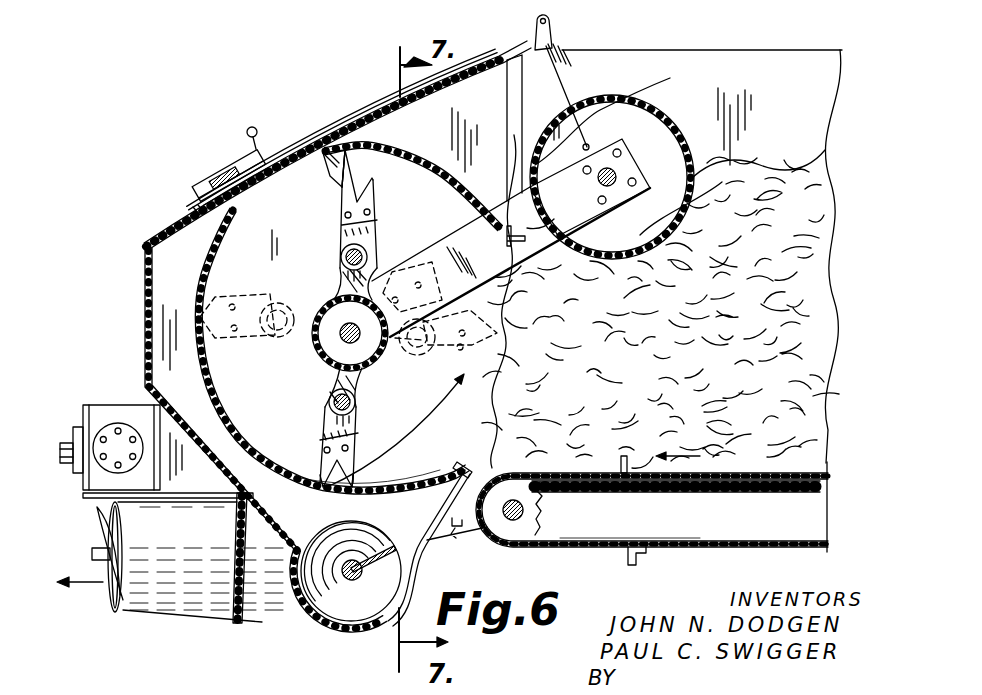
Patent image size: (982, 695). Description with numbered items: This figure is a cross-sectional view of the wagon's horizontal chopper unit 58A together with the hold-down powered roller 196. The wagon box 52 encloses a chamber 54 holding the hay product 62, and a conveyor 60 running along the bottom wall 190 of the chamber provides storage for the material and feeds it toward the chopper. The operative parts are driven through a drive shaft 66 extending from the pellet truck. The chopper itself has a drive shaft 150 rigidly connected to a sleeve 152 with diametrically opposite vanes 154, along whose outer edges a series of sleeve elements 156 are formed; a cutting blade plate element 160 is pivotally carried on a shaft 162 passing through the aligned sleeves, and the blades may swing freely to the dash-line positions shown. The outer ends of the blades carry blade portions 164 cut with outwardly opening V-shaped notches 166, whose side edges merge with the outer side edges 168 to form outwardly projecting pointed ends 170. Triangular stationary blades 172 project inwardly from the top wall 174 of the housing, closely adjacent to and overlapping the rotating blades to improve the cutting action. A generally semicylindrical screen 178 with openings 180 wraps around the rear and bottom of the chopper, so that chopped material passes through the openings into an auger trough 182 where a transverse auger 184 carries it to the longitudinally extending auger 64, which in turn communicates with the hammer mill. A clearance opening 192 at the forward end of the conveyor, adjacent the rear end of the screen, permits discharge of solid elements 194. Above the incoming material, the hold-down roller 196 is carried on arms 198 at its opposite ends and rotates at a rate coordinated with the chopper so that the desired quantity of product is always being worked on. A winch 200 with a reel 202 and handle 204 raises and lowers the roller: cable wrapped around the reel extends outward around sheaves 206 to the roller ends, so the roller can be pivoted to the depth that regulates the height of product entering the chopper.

The box 52 is at (716, 50).
The chamber 54 is at (805, 85).
The horizontally rotatable chopper unit 58A is at (303, 196).
The conveyor 60 is at (828, 462).
The product 62 is at (812, 323).
The auger 64 is at (122, 612).
The drive shaft 66 is at (60, 444).
The drive shaft 150 is at (333, 355).
The sleeve 152 is at (340, 298).
The vanes 154 is at (347, 284).
The sleeve elements 156 is at (368, 252).
The cutting blade plate element 160 is at (374, 231).
The shaft 162 is at (343, 258).
The blade portions 164 is at (372, 202).
The V-shaped notches 166 is at (356, 183).
The outer side edges 168 is at (320, 462).
The pointed ends 170 is at (320, 485).
The stationary blades 172 is at (333, 172).
The top wall 174 is at (392, 97).
The screen 178 is at (198, 303).
The openings 180 is at (224, 430).
The auger trough 182 is at (415, 540).
The transverse auger 184 is at (312, 622).
The bottom wall 190 is at (741, 494).
The clearance opening 192 is at (394, 431).
The solid elements 194 is at (520, 574).
The hold-down powered roller 196 is at (646, 96).
The arms 198 is at (510, 204).
The winch 200 is at (220, 150).
The reel 202 is at (248, 176).
The handle 204 is at (253, 126).
The sheaves 206 is at (535, 38).